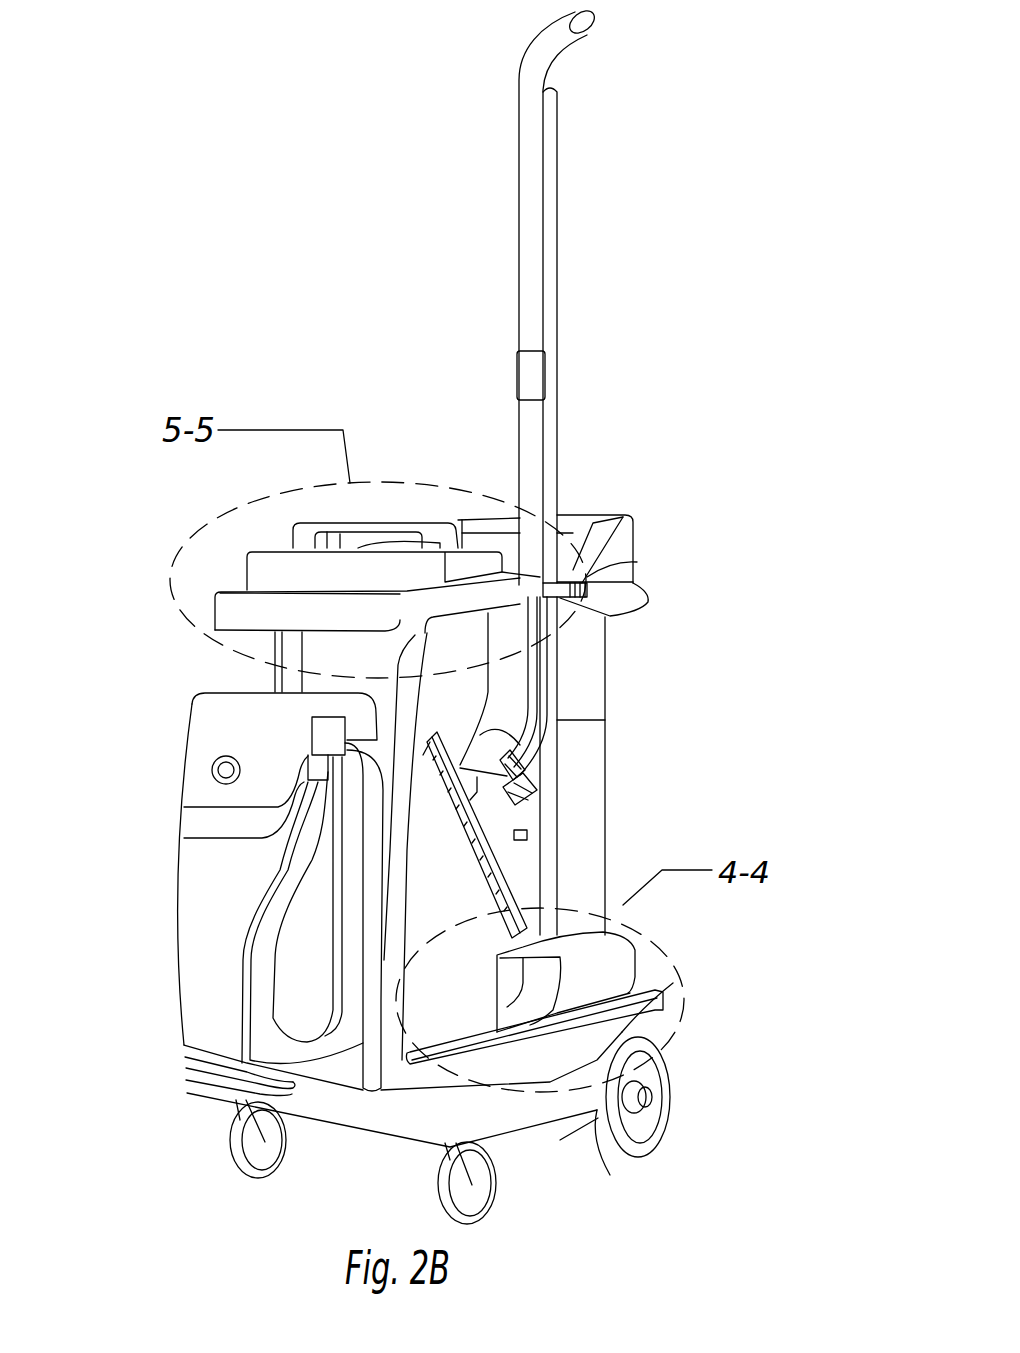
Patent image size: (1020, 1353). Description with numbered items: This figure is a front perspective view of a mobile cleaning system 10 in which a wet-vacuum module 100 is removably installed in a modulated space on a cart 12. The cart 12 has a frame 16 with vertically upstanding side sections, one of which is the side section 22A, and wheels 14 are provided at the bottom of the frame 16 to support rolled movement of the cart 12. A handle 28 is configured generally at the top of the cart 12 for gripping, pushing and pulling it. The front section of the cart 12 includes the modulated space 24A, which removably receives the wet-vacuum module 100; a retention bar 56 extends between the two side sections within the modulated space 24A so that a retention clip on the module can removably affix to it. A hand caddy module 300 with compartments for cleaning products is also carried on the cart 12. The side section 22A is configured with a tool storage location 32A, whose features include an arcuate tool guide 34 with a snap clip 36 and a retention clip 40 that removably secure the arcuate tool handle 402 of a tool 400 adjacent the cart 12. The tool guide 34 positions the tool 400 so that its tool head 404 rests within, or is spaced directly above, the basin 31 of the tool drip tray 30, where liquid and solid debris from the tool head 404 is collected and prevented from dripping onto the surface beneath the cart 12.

The mobile cleaning system 10 is at (590, 446).
The cart 12 is at (214, 618).
The wheels 14 is at (233, 1142).
The frame 16 is at (560, 1140).
The side section 22A is at (597, 662).
The modulated space 24A is at (306, 682).
The handle 28 is at (612, 514).
The tool drip tray 30 is at (678, 984).
The basin 31 is at (490, 1032).
The tool storage location 32A is at (586, 746).
The tool guide 34 is at (500, 728).
The snap clip 36 is at (538, 777).
The retention clip 40 is at (636, 563).
The retention bar 56 is at (528, 835).
The wet-vacuum module 100 is at (180, 906).
The hand caddy module 300 is at (318, 518).
The tool 400 is at (562, 186).
The tool handle 402 is at (546, 680).
The tool head 404 is at (482, 882).